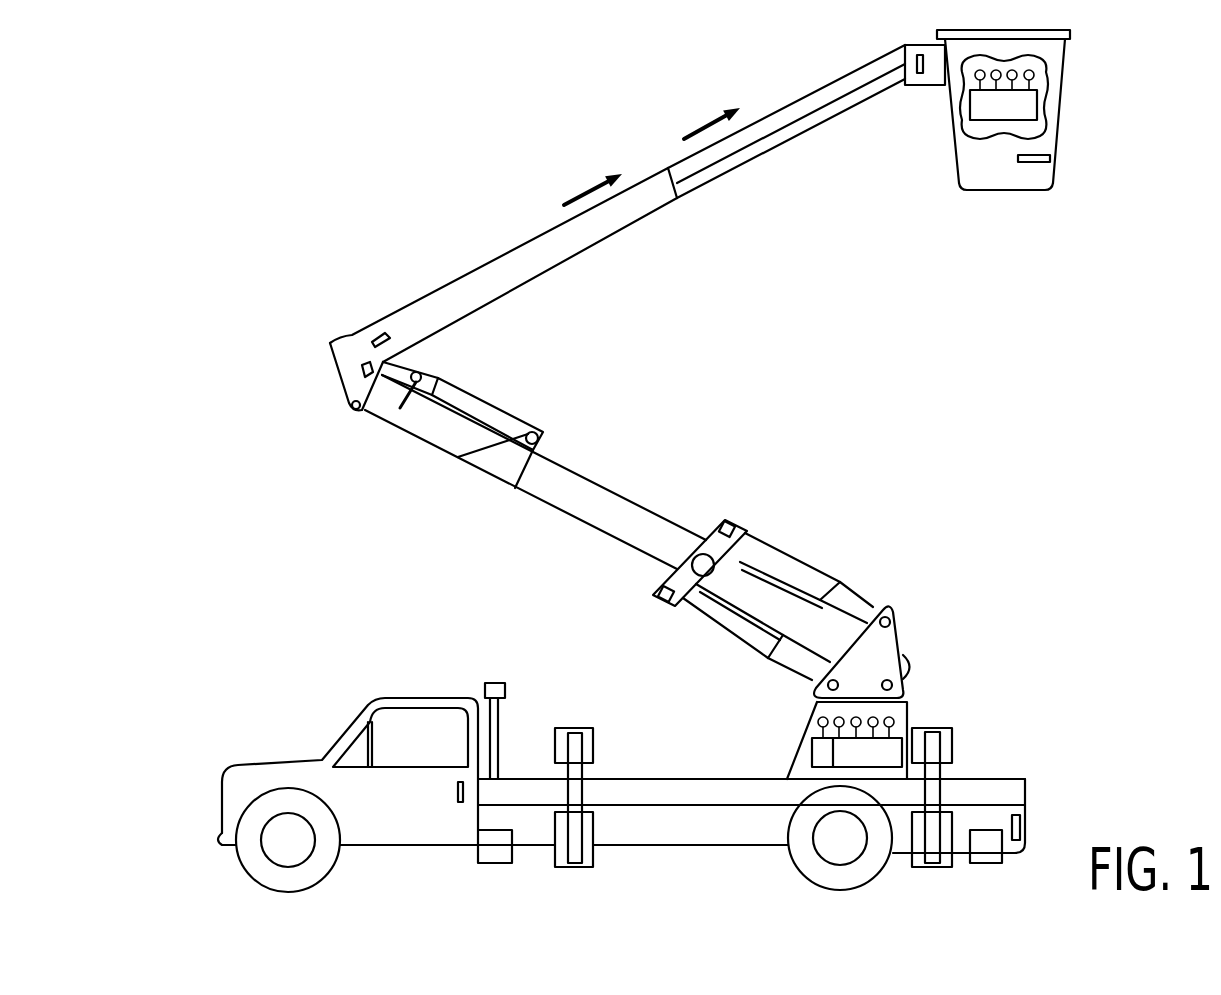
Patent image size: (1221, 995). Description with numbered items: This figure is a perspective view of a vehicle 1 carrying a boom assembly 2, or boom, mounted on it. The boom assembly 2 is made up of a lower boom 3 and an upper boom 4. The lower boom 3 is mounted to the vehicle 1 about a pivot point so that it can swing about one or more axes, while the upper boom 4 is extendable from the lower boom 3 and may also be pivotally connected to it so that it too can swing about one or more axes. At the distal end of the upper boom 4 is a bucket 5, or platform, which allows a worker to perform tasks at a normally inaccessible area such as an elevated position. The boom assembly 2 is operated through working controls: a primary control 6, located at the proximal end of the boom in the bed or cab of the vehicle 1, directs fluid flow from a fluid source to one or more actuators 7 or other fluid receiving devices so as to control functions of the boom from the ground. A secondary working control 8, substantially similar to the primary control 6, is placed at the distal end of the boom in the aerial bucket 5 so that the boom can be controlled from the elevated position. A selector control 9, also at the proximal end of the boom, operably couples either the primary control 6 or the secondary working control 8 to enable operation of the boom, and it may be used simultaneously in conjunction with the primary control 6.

The vehicle 1 is at (245, 655).
The boom assembly 2 is at (267, 193).
The lower boom 3 is at (642, 525).
The upper boom 4 is at (608, 220).
The bucket 5 is at (1010, 178).
The primary control 6 is at (883, 748).
The actuators 7 is at (477, 408).
The secondary working control 8 is at (1027, 107).
The selector control 9 is at (815, 758).